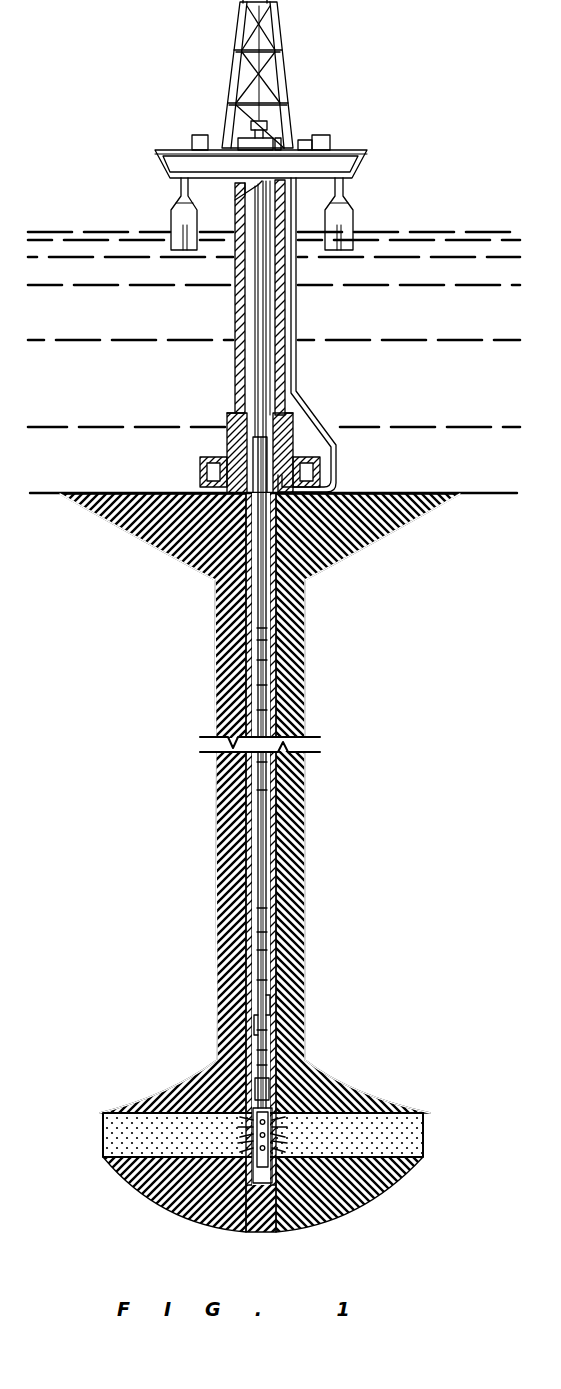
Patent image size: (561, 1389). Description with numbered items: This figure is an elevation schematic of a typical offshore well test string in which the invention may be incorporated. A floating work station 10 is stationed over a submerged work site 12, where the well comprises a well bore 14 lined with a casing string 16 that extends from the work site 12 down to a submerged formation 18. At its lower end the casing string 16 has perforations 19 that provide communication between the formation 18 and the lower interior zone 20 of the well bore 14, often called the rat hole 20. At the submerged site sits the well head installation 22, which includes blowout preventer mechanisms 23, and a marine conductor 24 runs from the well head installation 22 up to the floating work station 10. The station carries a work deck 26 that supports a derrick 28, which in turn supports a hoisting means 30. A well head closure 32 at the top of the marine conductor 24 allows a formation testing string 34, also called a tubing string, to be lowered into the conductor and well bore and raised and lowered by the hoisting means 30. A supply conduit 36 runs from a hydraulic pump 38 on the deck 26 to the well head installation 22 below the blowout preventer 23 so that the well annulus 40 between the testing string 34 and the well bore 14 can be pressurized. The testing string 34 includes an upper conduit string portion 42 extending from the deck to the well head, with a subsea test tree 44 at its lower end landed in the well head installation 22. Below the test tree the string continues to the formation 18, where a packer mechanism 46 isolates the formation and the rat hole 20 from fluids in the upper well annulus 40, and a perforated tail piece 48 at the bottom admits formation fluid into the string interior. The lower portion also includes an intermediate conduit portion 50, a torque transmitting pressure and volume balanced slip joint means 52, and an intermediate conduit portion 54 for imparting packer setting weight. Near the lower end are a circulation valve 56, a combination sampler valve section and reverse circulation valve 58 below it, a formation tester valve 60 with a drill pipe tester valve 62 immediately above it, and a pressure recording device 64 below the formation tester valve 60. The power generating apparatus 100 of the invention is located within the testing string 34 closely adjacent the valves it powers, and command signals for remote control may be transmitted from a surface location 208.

The floating work station 10 is at (338, 222).
The submerged work site 12 is at (398, 492).
The well bore 14 is at (277, 649).
The casing string 16 is at (282, 581).
The submerged formation 18 is at (392, 1128).
The perforations 19 is at (308, 1195).
The lower interior zone 20 is at (265, 1172).
The well head installation 22 is at (236, 420).
The blowout preventer mechanisms 23 is at (205, 465).
The marine conductor 24 is at (238, 328).
The work deck 26 is at (168, 150).
The derrick 28 is at (278, 33).
The hoisting means 30 is at (259, 121).
The well head closure 32 is at (272, 142).
The formation testing string 34 is at (258, 631).
The supply conduit 36 is at (297, 327).
The hydraulic pump 38 is at (326, 140).
The well annulus 40 is at (272, 1005).
The upper conduit string portion 42 is at (262, 395).
The subsea test tree 44 is at (258, 447).
The packer mechanism 46 is at (266, 1087).
The perforated tail piece 48 is at (225, 1198).
The intermediate conduit portion 50 is at (262, 608).
The slip joint means 52 is at (262, 661).
The intermediate conduit portion 54 is at (262, 712).
The circulation valve 56 is at (262, 791).
The combination sampler valve section and reverse circulation valve 58 is at (262, 922).
The formation tester valve 60 is at (262, 983).
The drill pipe tester valve 62 is at (262, 951).
The pressure recording device 64 is at (262, 1052).
The apparatus of the present invention 100 is at (258, 1025).
The surface location 208 is at (200, 132).